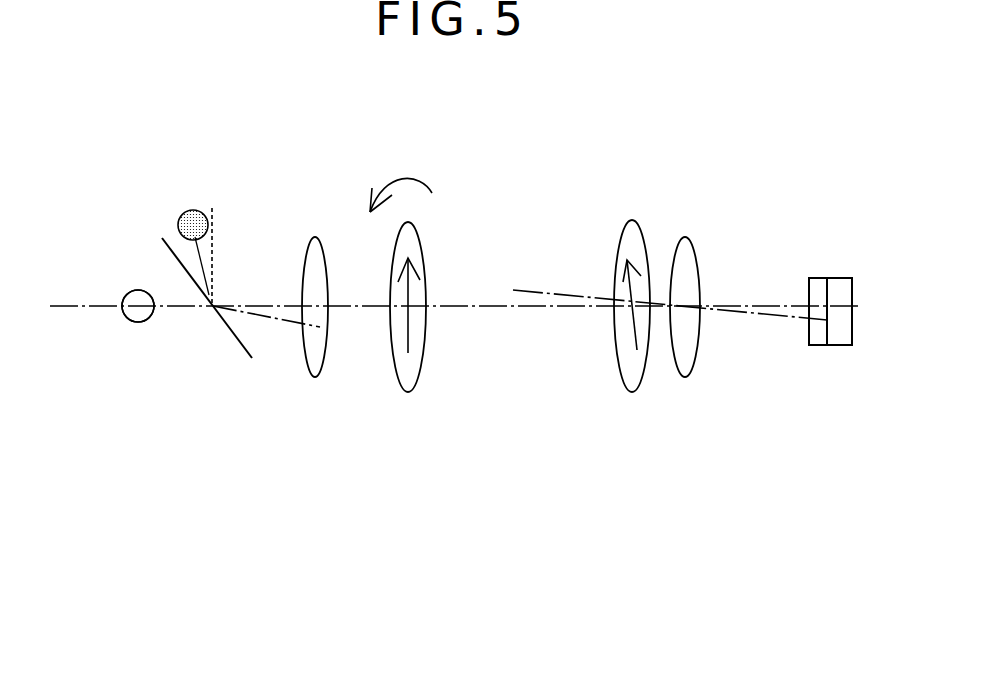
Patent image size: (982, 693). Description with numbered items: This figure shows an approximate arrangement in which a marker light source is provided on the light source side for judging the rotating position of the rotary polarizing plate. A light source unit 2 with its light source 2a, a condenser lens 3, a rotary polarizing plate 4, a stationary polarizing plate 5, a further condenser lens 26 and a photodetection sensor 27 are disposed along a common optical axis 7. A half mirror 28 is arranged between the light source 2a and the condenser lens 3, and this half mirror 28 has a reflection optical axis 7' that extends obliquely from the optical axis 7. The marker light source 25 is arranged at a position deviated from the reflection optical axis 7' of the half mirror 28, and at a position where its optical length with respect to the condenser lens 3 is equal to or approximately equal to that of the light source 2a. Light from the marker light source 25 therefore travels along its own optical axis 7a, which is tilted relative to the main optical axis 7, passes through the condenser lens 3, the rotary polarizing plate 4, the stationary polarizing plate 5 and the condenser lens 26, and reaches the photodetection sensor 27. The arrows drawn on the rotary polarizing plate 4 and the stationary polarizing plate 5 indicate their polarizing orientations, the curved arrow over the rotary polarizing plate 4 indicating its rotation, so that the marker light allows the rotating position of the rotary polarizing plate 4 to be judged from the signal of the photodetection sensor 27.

The light source unit 2 is at (138, 263).
The light source 2a is at (138, 322).
The marker light source 25 is at (183, 213).
The half mirror 28 is at (238, 343).
The optical axis 7 is at (456, 245).
The optical axis of the marker light source 7a is at (212, 250).
The reflection optical axis 7' is at (266, 263).
The condenser lens 3 is at (311, 240).
The rotary polarizing plate 4 is at (420, 238).
The stationary polarizing plate 5 is at (637, 228).
The condenser lens 26 is at (700, 275).
The photodetection sensor 27 is at (833, 283).